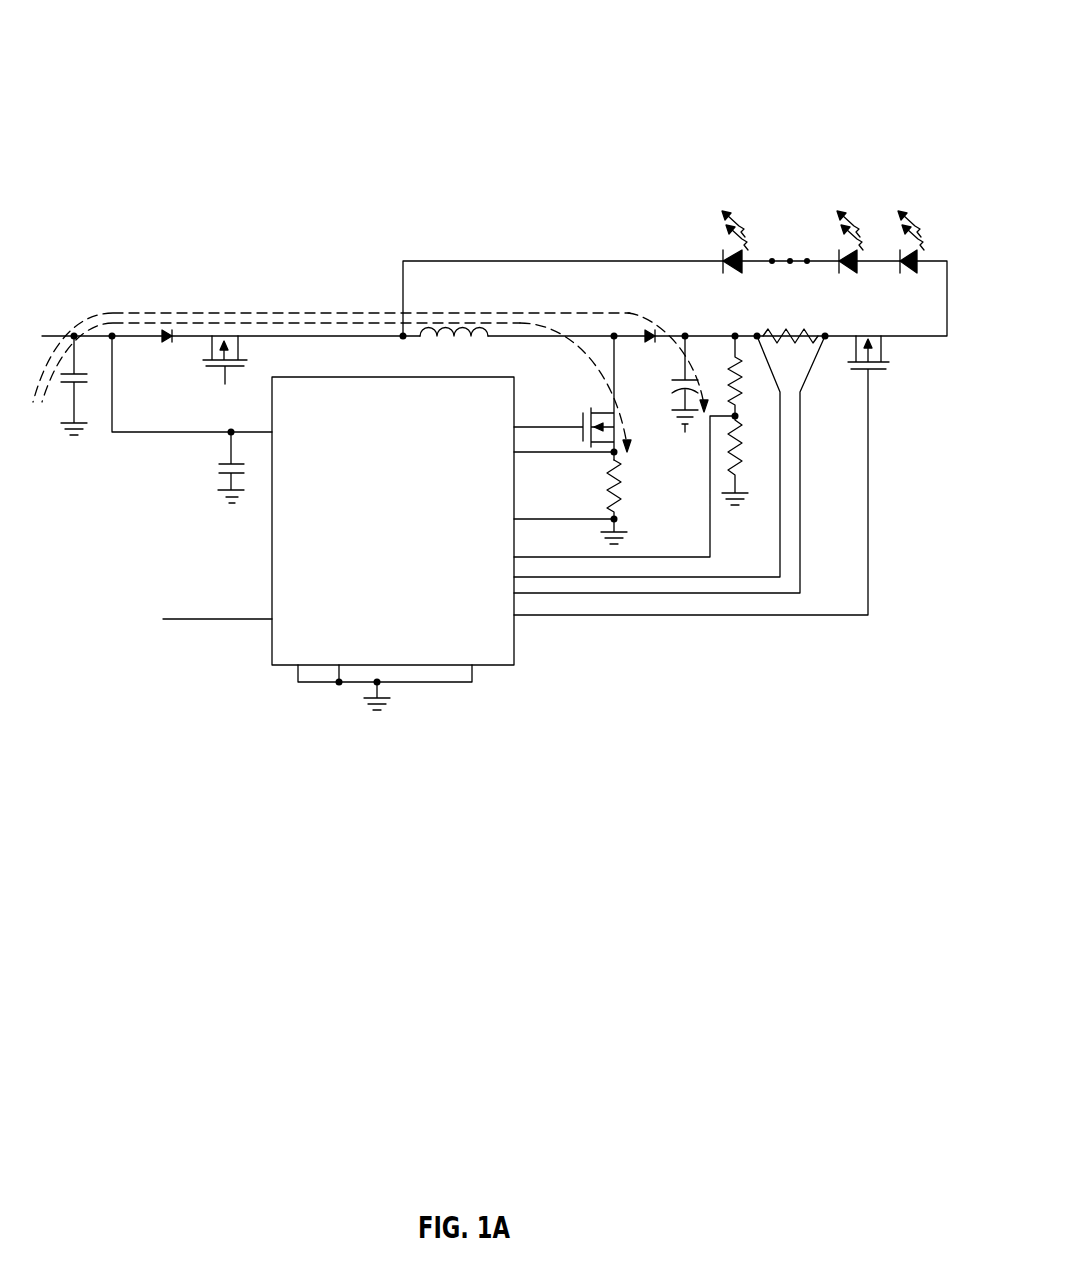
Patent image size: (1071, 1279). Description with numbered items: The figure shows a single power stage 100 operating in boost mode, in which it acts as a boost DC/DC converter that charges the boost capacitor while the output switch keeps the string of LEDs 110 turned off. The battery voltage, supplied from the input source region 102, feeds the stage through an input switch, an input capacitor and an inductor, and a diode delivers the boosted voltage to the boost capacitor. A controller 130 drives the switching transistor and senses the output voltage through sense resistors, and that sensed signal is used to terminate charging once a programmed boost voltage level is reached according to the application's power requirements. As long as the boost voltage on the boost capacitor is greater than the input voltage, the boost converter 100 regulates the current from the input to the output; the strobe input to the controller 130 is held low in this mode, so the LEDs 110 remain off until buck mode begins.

The single power stage 100 is at (481, 33).
The input power source (battery) 102 is at (55, 303).
The LED string 110 is at (716, 214).
The controller 130 is at (407, 547).